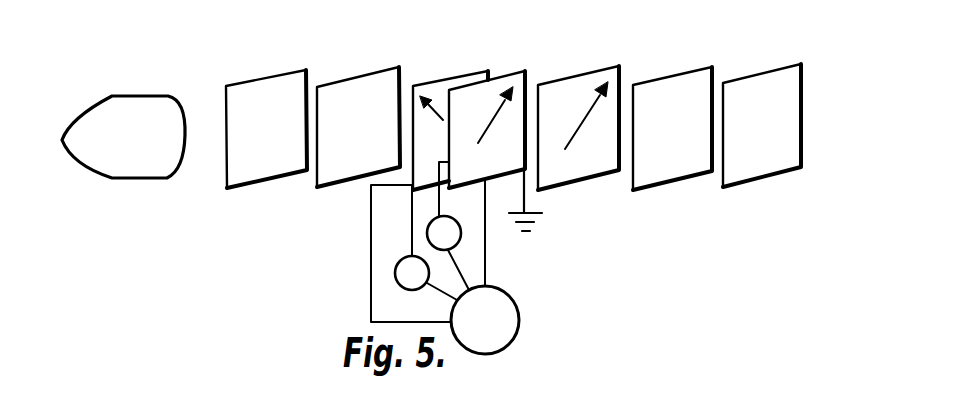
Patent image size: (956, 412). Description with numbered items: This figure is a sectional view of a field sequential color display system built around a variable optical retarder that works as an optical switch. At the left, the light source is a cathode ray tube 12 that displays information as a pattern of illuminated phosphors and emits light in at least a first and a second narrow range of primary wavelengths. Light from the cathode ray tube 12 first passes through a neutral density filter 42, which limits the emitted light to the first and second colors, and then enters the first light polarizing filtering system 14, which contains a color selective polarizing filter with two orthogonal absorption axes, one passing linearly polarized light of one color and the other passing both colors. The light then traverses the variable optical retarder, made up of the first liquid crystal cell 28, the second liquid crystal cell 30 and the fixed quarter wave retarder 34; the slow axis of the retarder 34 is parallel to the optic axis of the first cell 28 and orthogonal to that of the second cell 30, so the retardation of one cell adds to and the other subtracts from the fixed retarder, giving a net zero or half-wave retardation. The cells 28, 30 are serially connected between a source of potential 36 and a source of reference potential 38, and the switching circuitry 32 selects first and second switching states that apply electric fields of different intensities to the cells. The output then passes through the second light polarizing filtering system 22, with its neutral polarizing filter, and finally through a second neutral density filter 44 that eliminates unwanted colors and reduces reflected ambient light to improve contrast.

The cathode ray tube 12 is at (108, 161).
The neutral density filter 42 is at (266, 129).
The first light polarizing filtering system 14 is at (358, 127).
The first liquid crystal cell 28 is at (429, 196).
The second liquid crystal cell 30 is at (495, 178).
The fixed quarter wave retarder 34 is at (578, 128).
The second light polarizing filtering system 22 is at (672, 128).
The neutral density filter 44 is at (762, 125).
The switching circuitry 32 is at (485, 320).
The source of potential 36 is at (440, 212).
The source of reference potential 38 is at (428, 305).